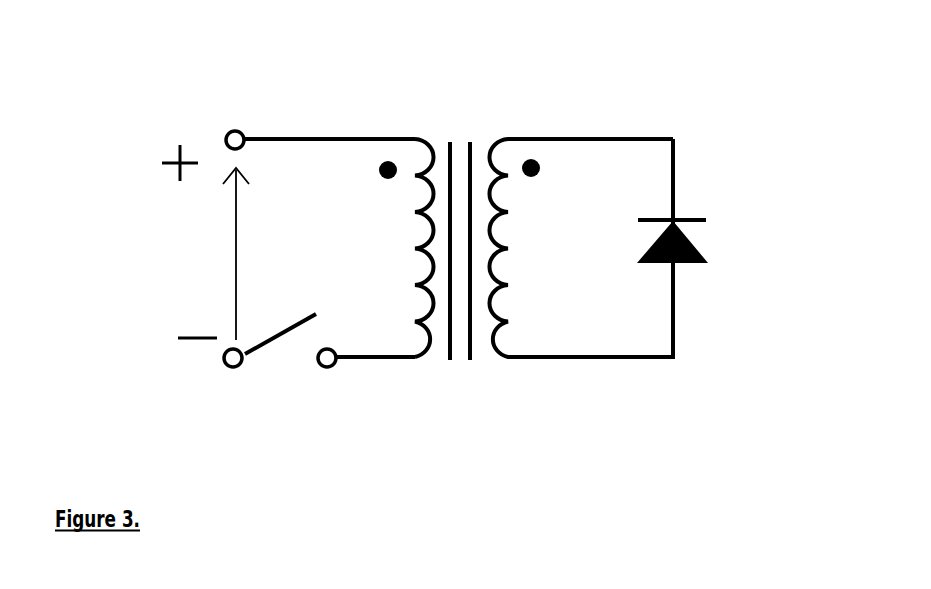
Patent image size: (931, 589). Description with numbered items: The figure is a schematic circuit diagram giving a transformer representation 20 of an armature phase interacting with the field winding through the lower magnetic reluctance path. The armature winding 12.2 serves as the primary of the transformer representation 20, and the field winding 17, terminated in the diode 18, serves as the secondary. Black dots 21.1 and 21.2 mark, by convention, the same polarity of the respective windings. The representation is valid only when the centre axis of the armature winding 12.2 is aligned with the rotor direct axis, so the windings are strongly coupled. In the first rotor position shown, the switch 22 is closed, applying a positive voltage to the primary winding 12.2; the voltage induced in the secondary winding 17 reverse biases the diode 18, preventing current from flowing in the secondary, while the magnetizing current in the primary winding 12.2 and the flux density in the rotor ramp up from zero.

The transformer representation 20 is at (170, 60).
The black dot 21.1 is at (388, 156).
The black dot 21.2 is at (530, 154).
The switch 22 is at (293, 328).
The armature winding 12.2 is at (418, 298).
The field winding 17 is at (507, 303).
The diode 18 is at (697, 242).